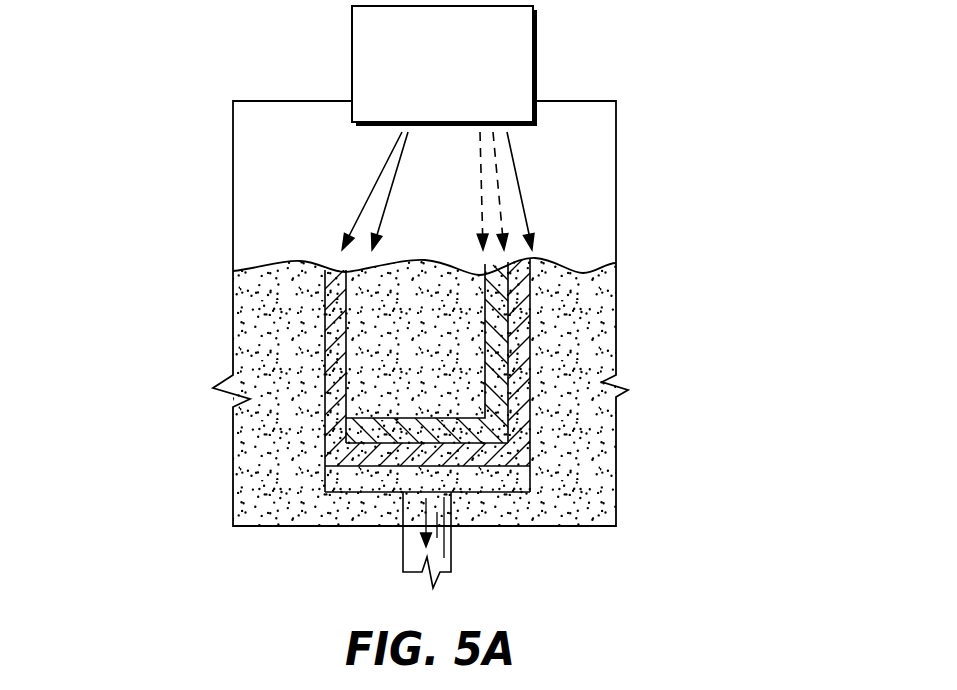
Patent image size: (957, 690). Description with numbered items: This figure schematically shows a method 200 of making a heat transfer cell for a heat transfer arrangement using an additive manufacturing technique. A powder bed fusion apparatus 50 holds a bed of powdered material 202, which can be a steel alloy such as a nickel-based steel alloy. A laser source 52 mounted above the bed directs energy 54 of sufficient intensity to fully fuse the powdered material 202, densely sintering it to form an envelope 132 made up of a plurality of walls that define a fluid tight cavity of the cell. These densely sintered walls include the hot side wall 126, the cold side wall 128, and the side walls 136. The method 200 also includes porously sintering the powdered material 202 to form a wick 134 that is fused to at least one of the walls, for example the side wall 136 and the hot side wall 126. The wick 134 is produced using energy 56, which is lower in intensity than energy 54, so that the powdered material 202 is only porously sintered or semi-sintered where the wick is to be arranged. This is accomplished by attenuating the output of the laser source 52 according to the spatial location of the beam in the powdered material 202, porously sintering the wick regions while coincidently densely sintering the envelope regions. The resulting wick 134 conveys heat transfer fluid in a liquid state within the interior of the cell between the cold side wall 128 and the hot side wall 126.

The powder bed fusion apparatus 50 is at (616, 193).
The laser source 52 is at (535, 52).
The energy 54 is at (378, 179).
The energy 56 is at (478, 187).
The hot side wall 126 is at (520, 412).
The cold side wall 128 is at (325, 410).
The envelope 132 is at (307, 398).
The wick 134 is at (402, 432).
The side walls 136 is at (453, 457).
The method 200 is at (38, 486).
The powdered material 202 is at (281, 375).